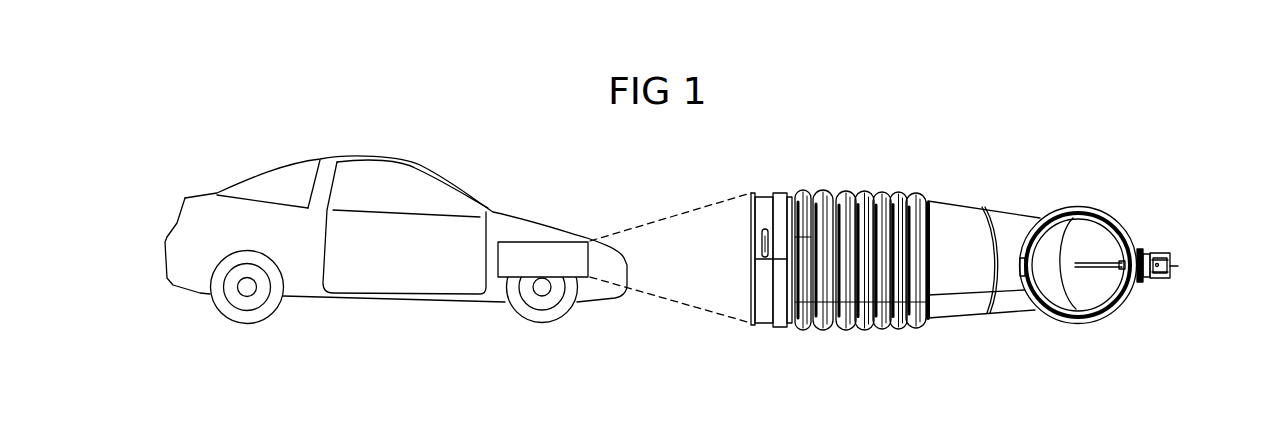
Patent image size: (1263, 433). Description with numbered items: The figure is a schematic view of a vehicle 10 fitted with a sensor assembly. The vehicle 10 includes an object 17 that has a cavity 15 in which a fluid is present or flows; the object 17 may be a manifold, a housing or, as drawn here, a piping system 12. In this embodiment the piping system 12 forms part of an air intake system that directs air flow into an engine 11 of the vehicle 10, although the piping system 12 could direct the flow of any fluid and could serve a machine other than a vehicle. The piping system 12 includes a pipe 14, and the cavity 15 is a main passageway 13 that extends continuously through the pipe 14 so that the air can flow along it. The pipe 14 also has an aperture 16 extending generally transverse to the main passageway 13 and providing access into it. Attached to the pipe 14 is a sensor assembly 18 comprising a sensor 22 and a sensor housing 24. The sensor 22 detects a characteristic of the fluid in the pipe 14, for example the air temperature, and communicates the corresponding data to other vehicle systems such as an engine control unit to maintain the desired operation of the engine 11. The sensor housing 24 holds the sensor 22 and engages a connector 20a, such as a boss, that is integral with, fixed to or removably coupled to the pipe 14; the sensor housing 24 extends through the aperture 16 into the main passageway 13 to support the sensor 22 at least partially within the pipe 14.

The vehicle 10 is at (313, 140).
The engine 11 is at (543, 242).
The piping system 12 is at (998, 186).
The main passageway 13 is at (1087, 287).
The pipe 14 is at (1005, 308).
The cavity 15 is at (1098, 245).
The aperture 16 is at (1140, 248).
The object 17 is at (943, 140).
The sensor assembly 18 is at (1185, 247).
The connector 20a is at (1156, 238).
The sensor 22 is at (1078, 252).
The sensor housing 24 is at (1183, 286).